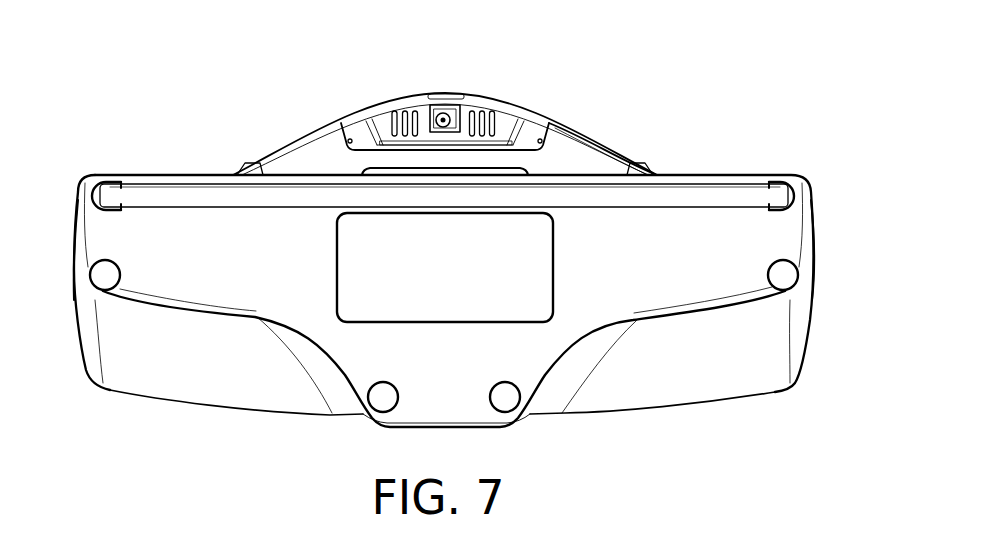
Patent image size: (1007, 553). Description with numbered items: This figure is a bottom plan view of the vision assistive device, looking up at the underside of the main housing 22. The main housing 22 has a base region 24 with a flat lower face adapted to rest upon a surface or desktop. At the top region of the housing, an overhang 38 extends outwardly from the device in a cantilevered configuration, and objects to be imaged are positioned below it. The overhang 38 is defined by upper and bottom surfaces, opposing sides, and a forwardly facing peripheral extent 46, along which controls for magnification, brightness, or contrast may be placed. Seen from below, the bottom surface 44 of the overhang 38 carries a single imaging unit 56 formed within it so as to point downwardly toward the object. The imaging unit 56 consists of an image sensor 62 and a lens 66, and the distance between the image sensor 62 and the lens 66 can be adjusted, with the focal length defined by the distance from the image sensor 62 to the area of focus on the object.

The main housing 22 is at (732, 180).
The base region 24 is at (806, 216).
The overhang 38 is at (513, 118).
The bottom surface 44 is at (514, 163).
The forwardly facing peripheral extent 46 is at (595, 155).
The imaging unit 56 is at (350, 76).
The image sensor 62 is at (456, 116).
The lens 66 is at (436, 116).